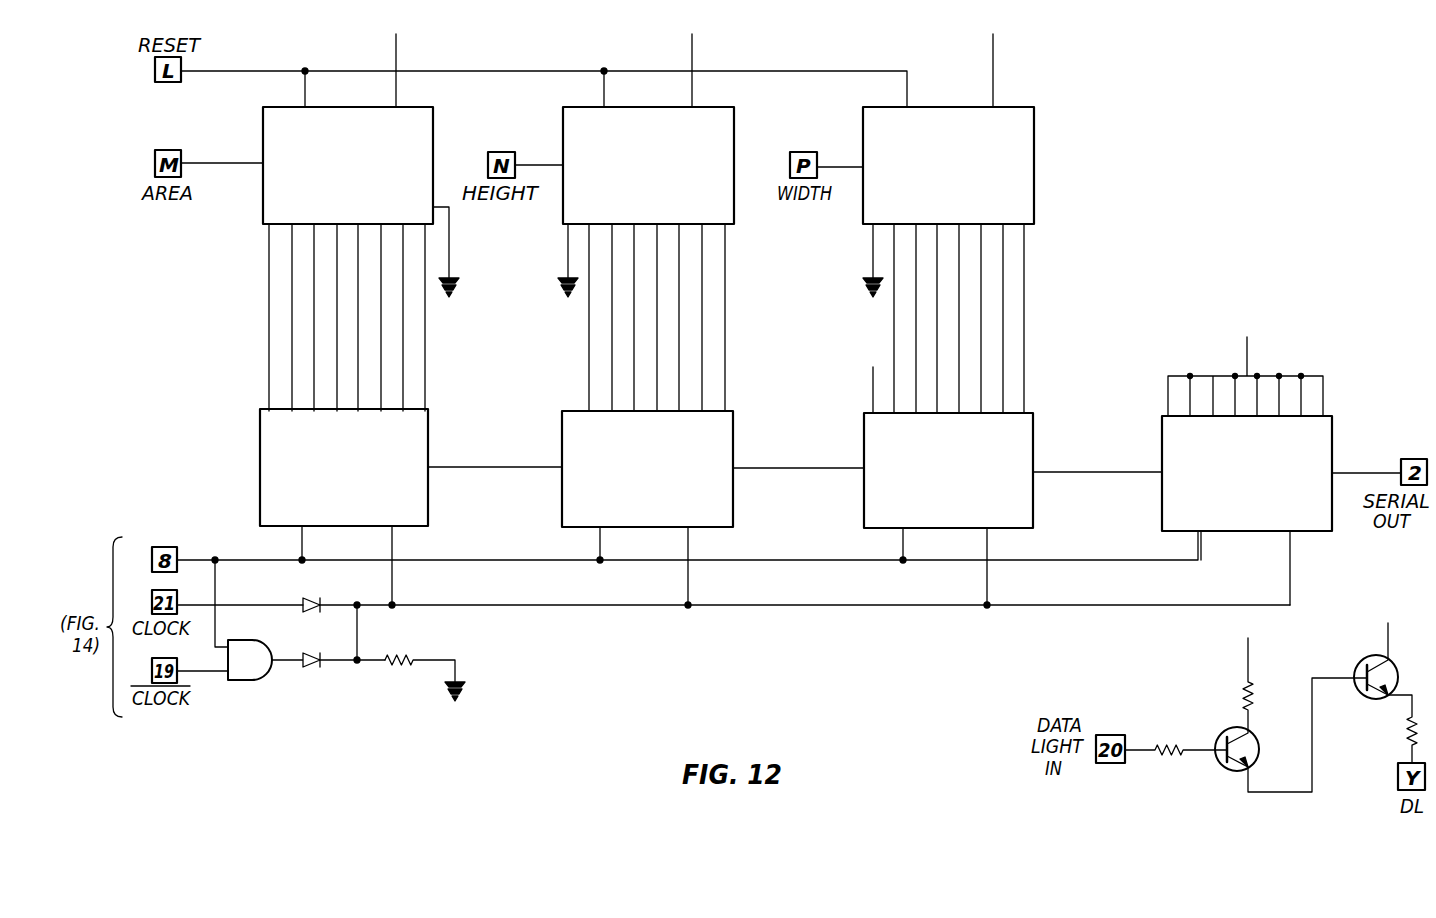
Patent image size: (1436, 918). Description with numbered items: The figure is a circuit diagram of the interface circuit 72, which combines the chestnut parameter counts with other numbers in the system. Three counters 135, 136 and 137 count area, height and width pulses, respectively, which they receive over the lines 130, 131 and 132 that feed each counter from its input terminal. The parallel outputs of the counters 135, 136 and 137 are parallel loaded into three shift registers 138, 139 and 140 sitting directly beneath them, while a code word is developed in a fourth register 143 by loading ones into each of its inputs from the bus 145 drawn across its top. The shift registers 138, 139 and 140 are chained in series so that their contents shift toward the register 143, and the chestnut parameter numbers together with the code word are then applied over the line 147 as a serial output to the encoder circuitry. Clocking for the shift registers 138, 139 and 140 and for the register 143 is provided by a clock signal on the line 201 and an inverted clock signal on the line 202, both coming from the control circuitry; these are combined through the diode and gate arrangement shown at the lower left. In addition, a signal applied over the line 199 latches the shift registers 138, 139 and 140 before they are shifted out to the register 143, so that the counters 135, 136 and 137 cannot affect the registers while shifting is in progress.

The interface circuit 72 is at (662, 614).
The area pulse line 130 is at (222, 160).
The height pulse line 131 is at (540, 163).
The width pulse line 132 is at (843, 165).
The area counter 135 is at (422, 118).
The height counter 136 is at (726, 117).
The width counter 137 is at (1027, 122).
The shift register 138 is at (420, 420).
The shift register 139 is at (727, 425).
The shift register 140 is at (1027, 425).
The code word register 143 is at (1162, 500).
The bus 145 is at (1247, 345).
The output line 147 is at (1363, 473).
The latch signal line 199 is at (198, 558).
The clock line 201 is at (197, 603).
The inverted clock line 202 is at (205, 676).